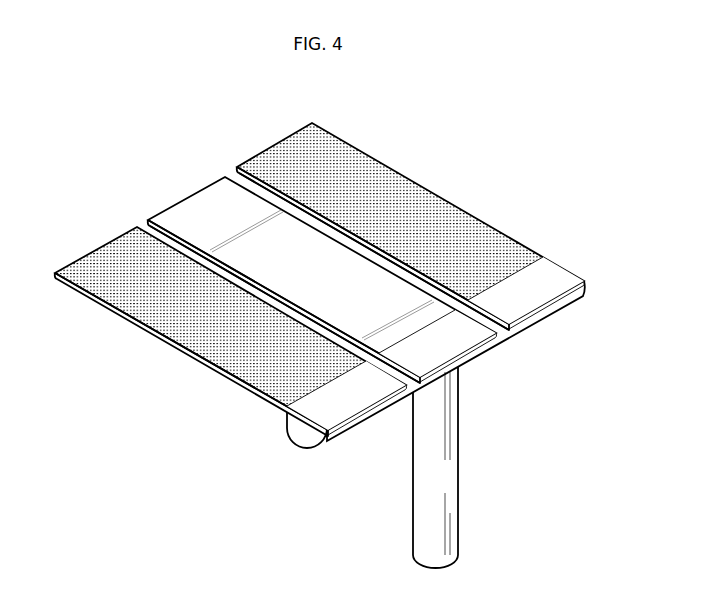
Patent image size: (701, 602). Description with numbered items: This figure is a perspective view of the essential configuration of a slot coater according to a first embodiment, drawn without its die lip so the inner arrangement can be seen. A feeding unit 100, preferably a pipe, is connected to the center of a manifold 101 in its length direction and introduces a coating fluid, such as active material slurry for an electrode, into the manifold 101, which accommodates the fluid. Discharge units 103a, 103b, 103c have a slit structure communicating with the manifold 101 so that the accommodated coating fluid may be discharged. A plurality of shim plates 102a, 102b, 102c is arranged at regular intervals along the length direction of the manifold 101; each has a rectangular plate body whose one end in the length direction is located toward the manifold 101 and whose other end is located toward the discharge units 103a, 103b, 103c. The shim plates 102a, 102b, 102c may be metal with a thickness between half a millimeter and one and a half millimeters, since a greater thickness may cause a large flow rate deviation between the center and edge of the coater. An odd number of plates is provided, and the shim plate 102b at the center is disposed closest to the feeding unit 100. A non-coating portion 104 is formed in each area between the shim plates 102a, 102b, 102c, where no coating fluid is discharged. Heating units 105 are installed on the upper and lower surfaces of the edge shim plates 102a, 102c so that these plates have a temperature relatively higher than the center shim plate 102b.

The feeding unit 100 is at (420, 500).
The manifold 101 is at (307, 437).
The shim plate 102a is at (358, 400).
The shim plate 102b is at (458, 338).
The shim plate 102c is at (528, 297).
The discharge unit 103a is at (89, 233).
The discharge unit 103b is at (181, 181).
The discharge unit 103c is at (270, 126).
The non-coating portion 104 is at (167, 245).
The heating unit 105 is at (140, 302).